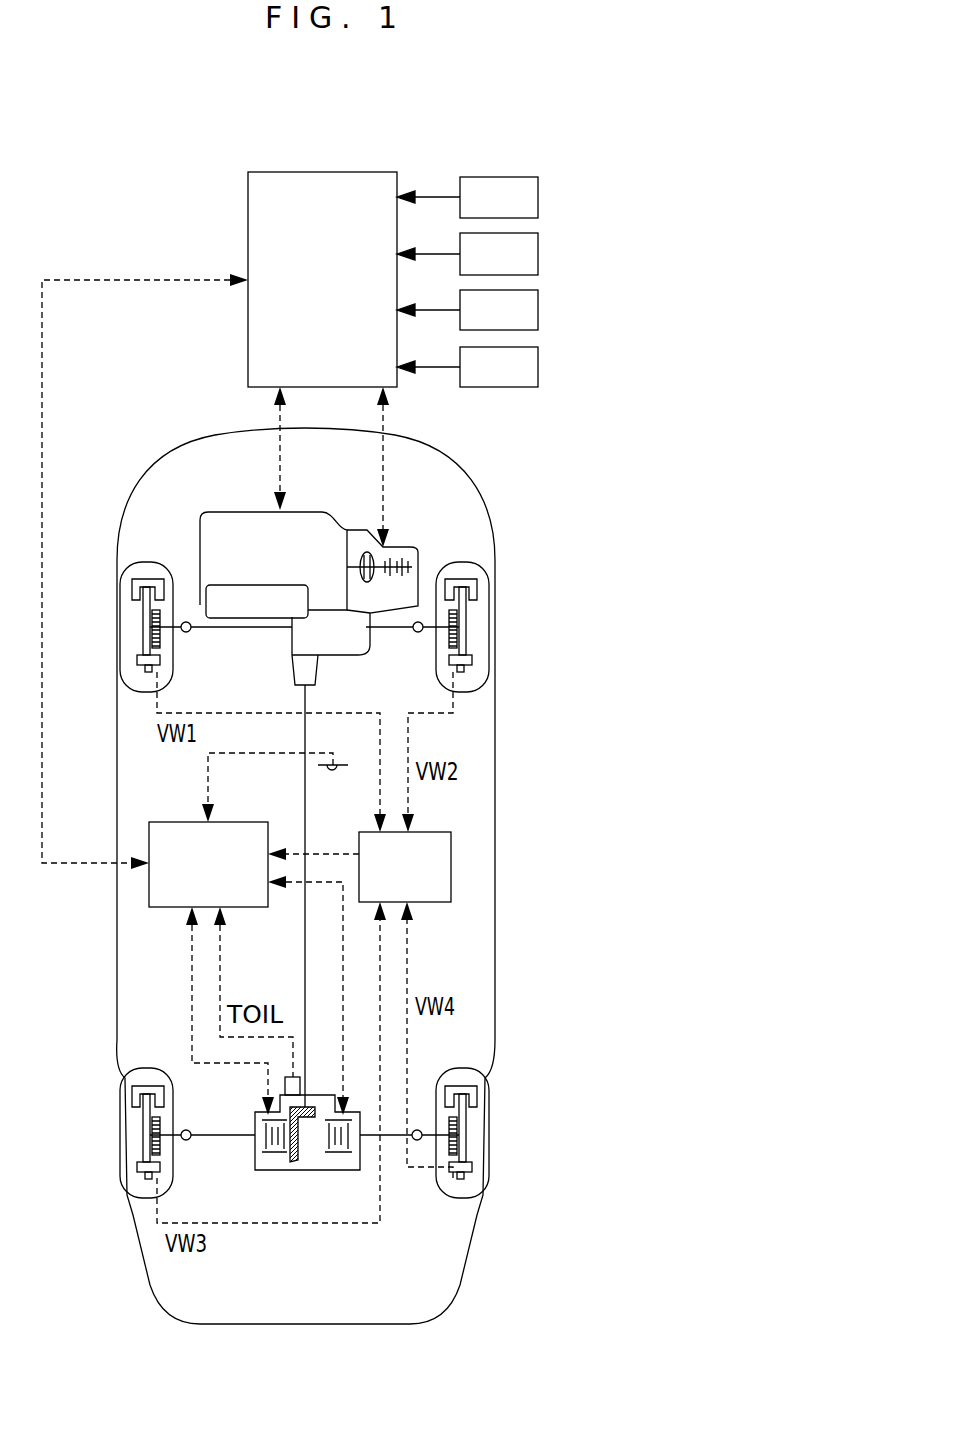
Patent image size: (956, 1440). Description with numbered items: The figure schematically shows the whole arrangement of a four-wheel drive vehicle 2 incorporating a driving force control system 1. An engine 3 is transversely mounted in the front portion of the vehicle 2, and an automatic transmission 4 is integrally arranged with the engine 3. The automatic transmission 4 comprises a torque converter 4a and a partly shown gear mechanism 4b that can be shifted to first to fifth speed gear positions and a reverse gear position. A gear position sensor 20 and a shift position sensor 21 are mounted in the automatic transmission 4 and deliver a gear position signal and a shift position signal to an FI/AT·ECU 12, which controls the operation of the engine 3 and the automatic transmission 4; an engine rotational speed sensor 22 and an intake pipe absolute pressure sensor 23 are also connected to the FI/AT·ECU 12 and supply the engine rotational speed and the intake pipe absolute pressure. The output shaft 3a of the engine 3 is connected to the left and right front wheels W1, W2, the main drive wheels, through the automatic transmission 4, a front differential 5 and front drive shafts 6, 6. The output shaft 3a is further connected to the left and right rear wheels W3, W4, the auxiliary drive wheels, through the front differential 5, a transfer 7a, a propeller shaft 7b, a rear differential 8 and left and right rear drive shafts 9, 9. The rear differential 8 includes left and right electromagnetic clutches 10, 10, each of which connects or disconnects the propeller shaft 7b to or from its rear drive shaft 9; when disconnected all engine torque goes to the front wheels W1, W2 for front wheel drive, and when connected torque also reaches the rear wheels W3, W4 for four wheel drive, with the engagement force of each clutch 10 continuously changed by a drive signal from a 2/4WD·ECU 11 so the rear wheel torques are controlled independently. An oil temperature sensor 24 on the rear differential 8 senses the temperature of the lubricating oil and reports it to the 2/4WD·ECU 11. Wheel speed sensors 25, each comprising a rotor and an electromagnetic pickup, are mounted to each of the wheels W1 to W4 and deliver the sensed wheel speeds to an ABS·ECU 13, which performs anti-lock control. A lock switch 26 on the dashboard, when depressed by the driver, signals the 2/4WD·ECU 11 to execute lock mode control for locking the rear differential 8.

The driving force control system 1 is at (586, 936).
The four-wheel drive vehicle 2 is at (495, 742).
The engine 3 is at (233, 512).
The output shaft 3a is at (350, 565).
The automatic transmission 4 is at (434, 537).
The torque converter 4a is at (368, 553).
The gear mechanism 4b is at (397, 560).
The front differential 5 is at (323, 658).
The front drive shafts 6 is at (197, 632).
The transfer 7a is at (292, 662).
The propeller shaft 7b is at (305, 985).
The rear differential 8 is at (313, 1170).
The rear drive shafts 9 is at (210, 1140).
The electromagnetic clutches 10 is at (272, 1152).
The 2/4WD·ECU 11 is at (193, 822).
The FI/AT·ECU 12 is at (322, 172).
The ABS·ECU 13 is at (452, 868).
The gear position sensor 20 is at (540, 187).
The shift position sensor 21 is at (540, 245).
The engine rotational speed sensor 22 is at (540, 303).
The intake pipe absolute pressure sensor 23 is at (540, 360).
The oil temperature sensor 24 is at (298, 1075).
The wheel speed sensors 25 is at (137, 660).
The lock switch 26 is at (333, 771).
The left front wheel W1 is at (140, 563).
The right front wheel W2 is at (478, 568).
The left rear wheel W3 is at (140, 1070).
The right rear wheel W4 is at (478, 1075).